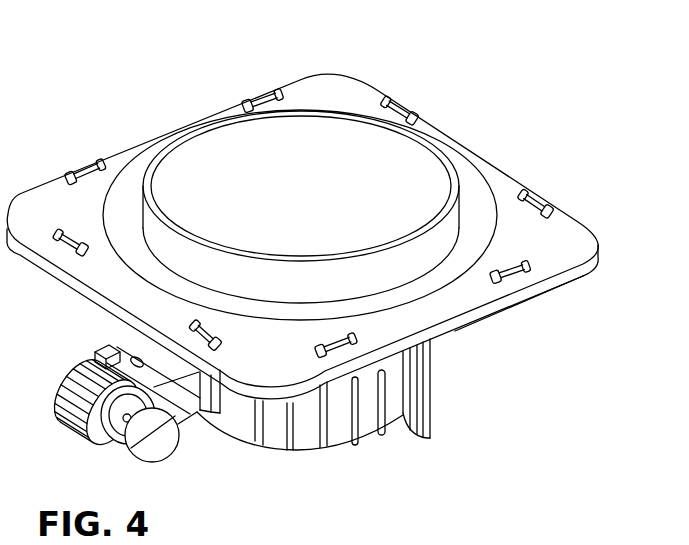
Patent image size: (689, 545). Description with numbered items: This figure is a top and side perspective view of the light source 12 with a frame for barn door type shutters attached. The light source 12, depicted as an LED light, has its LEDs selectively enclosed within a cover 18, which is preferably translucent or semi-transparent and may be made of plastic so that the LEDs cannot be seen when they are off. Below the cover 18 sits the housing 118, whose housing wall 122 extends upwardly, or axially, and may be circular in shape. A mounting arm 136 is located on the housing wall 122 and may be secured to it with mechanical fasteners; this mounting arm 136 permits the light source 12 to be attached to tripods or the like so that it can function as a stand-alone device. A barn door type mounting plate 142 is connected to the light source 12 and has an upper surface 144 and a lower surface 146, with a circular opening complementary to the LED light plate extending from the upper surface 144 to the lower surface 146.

The light source 12 is at (341, 420).
The cover 18 is at (317, 127).
The housing 118 is at (367, 432).
The housing wall 122 is at (307, 442).
The mounting arm 136 is at (137, 348).
The barn door type mounting plate 142 is at (563, 237).
The upper surface 144 is at (567, 252).
The lower surface 146 is at (547, 296).